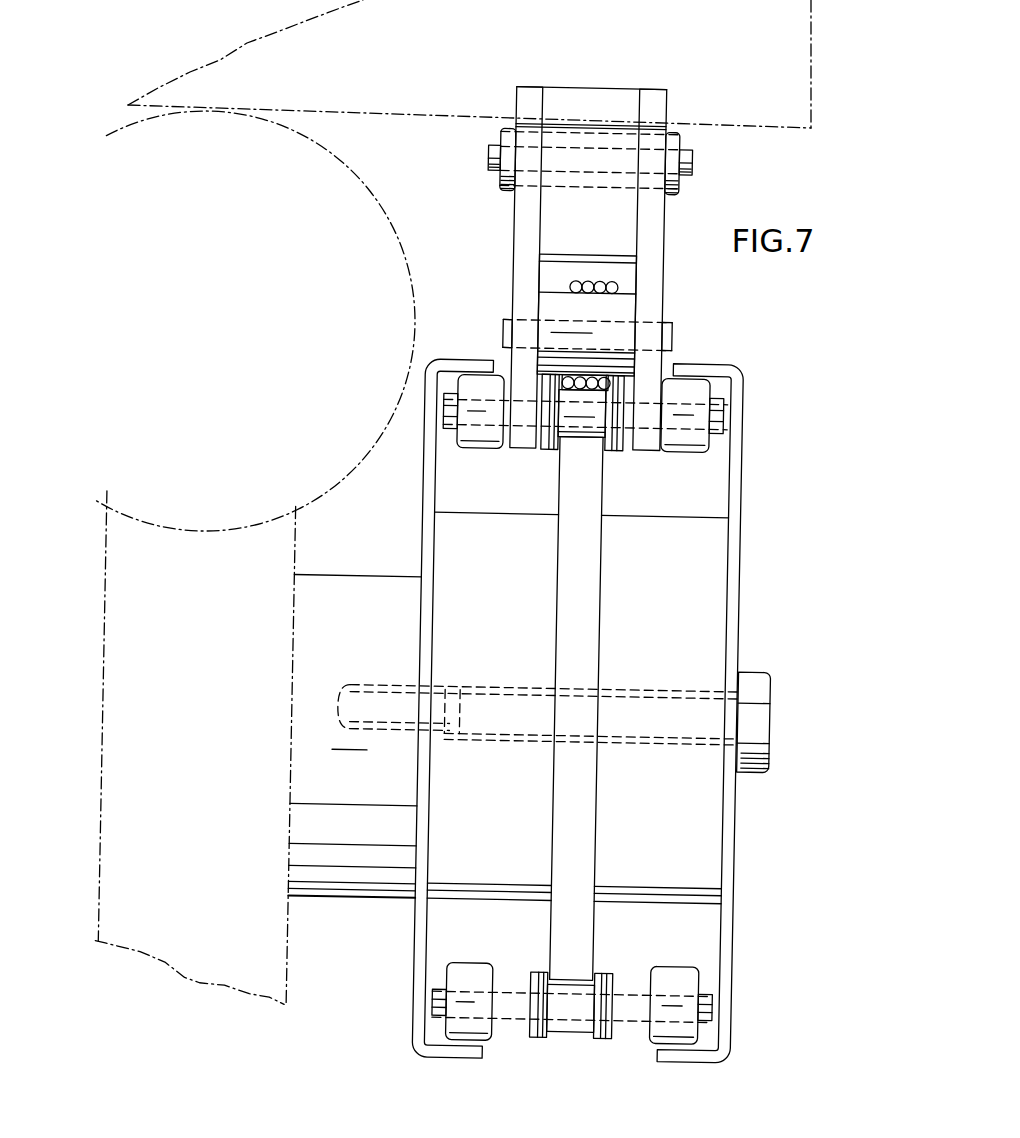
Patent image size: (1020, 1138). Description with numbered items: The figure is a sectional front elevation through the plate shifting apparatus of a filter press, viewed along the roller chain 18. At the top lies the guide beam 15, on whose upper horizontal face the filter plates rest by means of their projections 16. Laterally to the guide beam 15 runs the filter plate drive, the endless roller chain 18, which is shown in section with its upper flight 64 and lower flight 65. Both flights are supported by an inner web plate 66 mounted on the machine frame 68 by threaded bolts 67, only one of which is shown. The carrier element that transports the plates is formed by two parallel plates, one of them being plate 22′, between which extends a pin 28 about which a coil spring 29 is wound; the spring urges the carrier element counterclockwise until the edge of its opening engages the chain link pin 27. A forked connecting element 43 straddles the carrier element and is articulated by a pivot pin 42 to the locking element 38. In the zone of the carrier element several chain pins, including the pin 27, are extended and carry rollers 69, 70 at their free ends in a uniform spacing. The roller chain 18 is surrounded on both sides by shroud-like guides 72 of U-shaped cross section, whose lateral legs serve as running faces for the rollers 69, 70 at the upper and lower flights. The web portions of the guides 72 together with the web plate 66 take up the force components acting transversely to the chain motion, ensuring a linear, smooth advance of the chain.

The guide beam 15 is at (405, 272).
The projections 16 is at (806, 108).
The roller chain 18 is at (623, 395).
The plate 22′ is at (528, 96).
The chain link pin 27 is at (742, 420).
The pin 28 is at (552, 307).
The coil spring 29 is at (618, 290).
The locking element 38 is at (590, 100).
The pivot pin 42 is at (490, 160).
The forked connecting element 43 is at (505, 140).
The upper flight 64 is at (543, 450).
The lower flight 65 is at (532, 969).
The inner web plate 66 is at (603, 600).
The threaded bolt 67 is at (770, 712).
The machine frame 68 is at (300, 842).
The roller 69 is at (712, 448).
The roller 70 is at (480, 388).
The shroud-like guide 72 is at (437, 515).